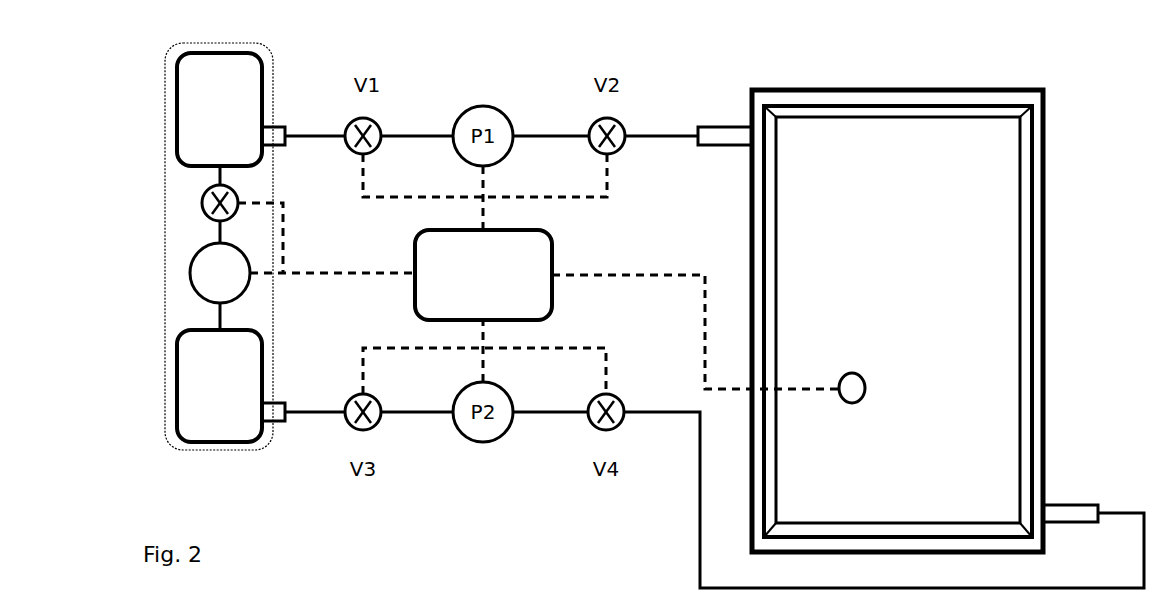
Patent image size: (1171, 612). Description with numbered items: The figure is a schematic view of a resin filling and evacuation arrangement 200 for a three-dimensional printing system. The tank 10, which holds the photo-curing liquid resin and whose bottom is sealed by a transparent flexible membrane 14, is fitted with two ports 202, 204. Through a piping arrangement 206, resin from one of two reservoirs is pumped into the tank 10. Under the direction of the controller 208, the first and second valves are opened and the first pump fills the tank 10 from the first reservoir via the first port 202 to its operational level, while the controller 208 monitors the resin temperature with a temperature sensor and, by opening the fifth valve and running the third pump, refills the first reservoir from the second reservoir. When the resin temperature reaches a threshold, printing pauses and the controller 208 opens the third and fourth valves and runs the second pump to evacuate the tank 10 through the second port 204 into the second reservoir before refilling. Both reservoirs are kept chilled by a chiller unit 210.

The resin filling and evacuation arrangement 200 is at (960, 48).
The port 202 is at (717, 127).
The port 204 is at (1078, 503).
The piping arrangement 206 is at (645, 236).
The controller 208 is at (466, 300).
The chiller unit 210 is at (165, 252).
The tank 10 is at (882, 335).
The flexible membrane 14 is at (994, 178).